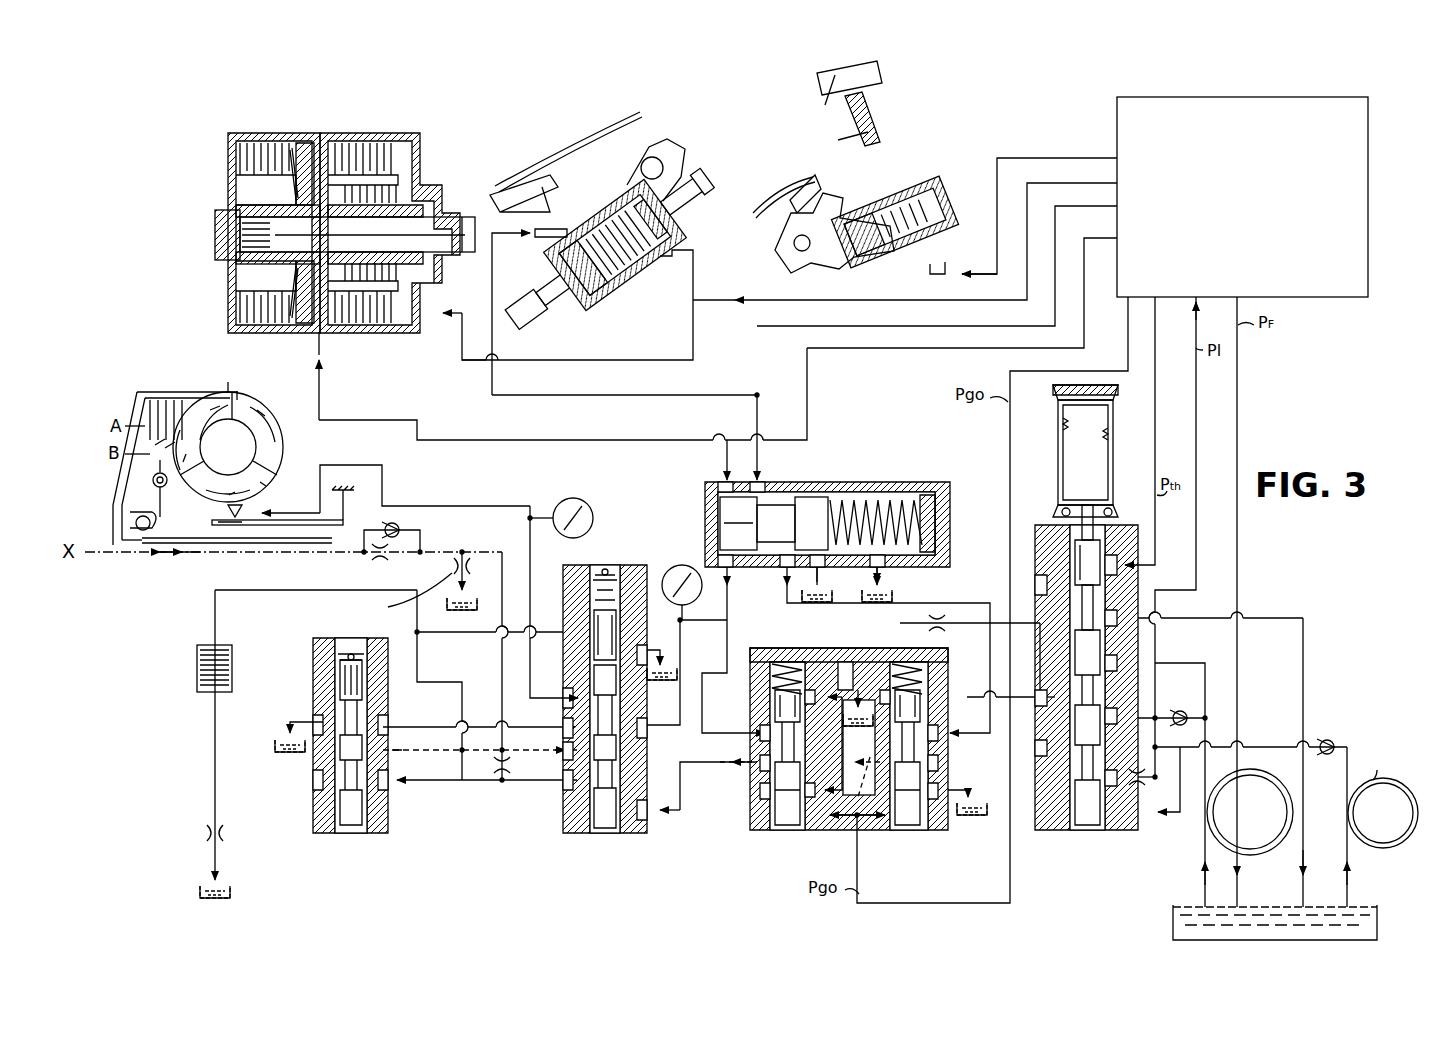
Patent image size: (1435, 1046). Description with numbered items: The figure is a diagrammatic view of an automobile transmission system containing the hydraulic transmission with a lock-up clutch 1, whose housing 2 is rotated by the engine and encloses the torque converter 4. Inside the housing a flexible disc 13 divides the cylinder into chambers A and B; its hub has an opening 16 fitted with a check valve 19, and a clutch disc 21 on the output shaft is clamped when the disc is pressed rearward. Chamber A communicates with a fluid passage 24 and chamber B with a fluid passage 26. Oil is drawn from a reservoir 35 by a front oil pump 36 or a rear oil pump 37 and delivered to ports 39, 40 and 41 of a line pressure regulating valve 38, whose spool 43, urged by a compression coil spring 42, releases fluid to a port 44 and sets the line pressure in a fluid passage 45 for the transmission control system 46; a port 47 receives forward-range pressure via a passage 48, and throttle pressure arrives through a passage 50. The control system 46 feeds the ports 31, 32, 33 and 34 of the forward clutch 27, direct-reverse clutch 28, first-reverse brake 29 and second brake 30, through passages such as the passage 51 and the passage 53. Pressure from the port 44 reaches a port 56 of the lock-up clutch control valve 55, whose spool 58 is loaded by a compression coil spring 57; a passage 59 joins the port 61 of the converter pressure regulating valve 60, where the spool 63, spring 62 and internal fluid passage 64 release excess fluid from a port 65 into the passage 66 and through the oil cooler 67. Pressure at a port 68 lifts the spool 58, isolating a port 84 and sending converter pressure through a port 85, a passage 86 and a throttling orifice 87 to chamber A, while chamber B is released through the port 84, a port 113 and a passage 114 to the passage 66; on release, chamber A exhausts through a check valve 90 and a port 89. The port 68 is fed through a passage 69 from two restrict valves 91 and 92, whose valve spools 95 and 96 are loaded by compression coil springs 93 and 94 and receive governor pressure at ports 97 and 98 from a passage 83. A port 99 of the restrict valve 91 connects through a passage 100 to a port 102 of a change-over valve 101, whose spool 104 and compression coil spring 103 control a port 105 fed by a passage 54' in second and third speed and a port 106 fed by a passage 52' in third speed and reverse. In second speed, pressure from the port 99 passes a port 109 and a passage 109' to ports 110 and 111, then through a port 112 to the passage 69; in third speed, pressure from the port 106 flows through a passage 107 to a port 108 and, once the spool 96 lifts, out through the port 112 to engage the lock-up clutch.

The hydraulic transmission with a lock-up clutch 1 is at (228, 421).
The housing 2 is at (150, 385).
The hydraulic torque converter 4 is at (234, 428).
The flexible disc 13 is at (153, 480).
The opening 16 is at (175, 552).
The check valve 19 is at (133, 521).
The clutch disc 21 is at (172, 517).
The fluid passage 24 is at (268, 556).
The fluid passage 26 is at (468, 506).
The forward clutch 27 is at (226, 151).
The direct-reverse clutch 28 is at (424, 158).
The first-reverse brake 29 is at (902, 178).
The second brake 30 is at (668, 178).
The port 31 is at (322, 335).
The port 32 is at (429, 310).
The port 33 is at (946, 262).
The port 34 is at (545, 235).
The reservoir 35 is at (1173, 928).
The front oil pump 36 is at (1246, 852).
The rear oil pump 37 is at (1376, 848).
The line pressure regulating valve 38 is at (1141, 646).
The port 39 is at (1118, 706).
The port 40 is at (1118, 662).
The port 41 is at (1138, 782).
The compression coil spring 42 is at (1053, 399).
The spool 43 is at (1040, 600).
The port 44 is at (1028, 715).
The fluid passage 45 is at (1196, 545).
The transmission control system 46 is at (1340, 298).
The port 47 is at (1058, 832).
The passage 48 is at (1238, 418).
The passage 50 is at (1155, 420).
The passage 51 is at (607, 440).
The passage 52' is at (905, 241).
The passage 53 is at (999, 156).
The passage 54' is at (915, 278).
The lock-up clutch control valve 55 is at (565, 811).
The port 56 is at (634, 718).
The compression coil spring 57 is at (623, 610).
The spool 58 is at (586, 690).
The passage 59 is at (464, 724).
The converter pressure regulating valve 60 is at (352, 763).
The port 61 is at (374, 788).
The compression coil spring 62 is at (338, 671).
The spool 63 is at (322, 757).
The fluid passage 64 is at (345, 797).
The port 65 is at (378, 732).
The passage 66 is at (417, 675).
The oil cooler 67 is at (192, 676).
The port 68 is at (575, 697).
The passage 69 is at (682, 770).
The passage 83 is at (959, 903).
The port 84 is at (575, 708).
The port 85 is at (573, 760).
The passage 86 is at (504, 614).
The throttling orifice 87 is at (372, 565).
The port 89 is at (575, 787).
The check valve 90 is at (401, 519).
The restrict valve 91 is at (912, 832).
The restrict valve 92 is at (914, 615).
The compression coil spring 93 is at (913, 654).
The compression coil spring 94 is at (780, 665).
The valve spool 95 is at (872, 735).
The valve spool 96 is at (752, 731).
The port 97 is at (892, 827).
The port 98 is at (805, 827).
The port 99 is at (932, 739).
The passage 100 is at (888, 603).
The change-over valve 101 is at (800, 506).
The port 102 is at (778, 577).
The compression coil spring 103 is at (897, 496).
The spool 104 is at (815, 498).
The port 105 is at (778, 476).
The port 106 is at (705, 504).
The passage 107 is at (728, 650).
The port 108 is at (768, 712).
The port 109 is at (966, 771).
The passage 109' is at (854, 786).
The port 110 is at (763, 787).
The port 111 is at (851, 695).
The port 112 is at (763, 758).
The port 113 is at (585, 665).
The passage 114 is at (556, 632).